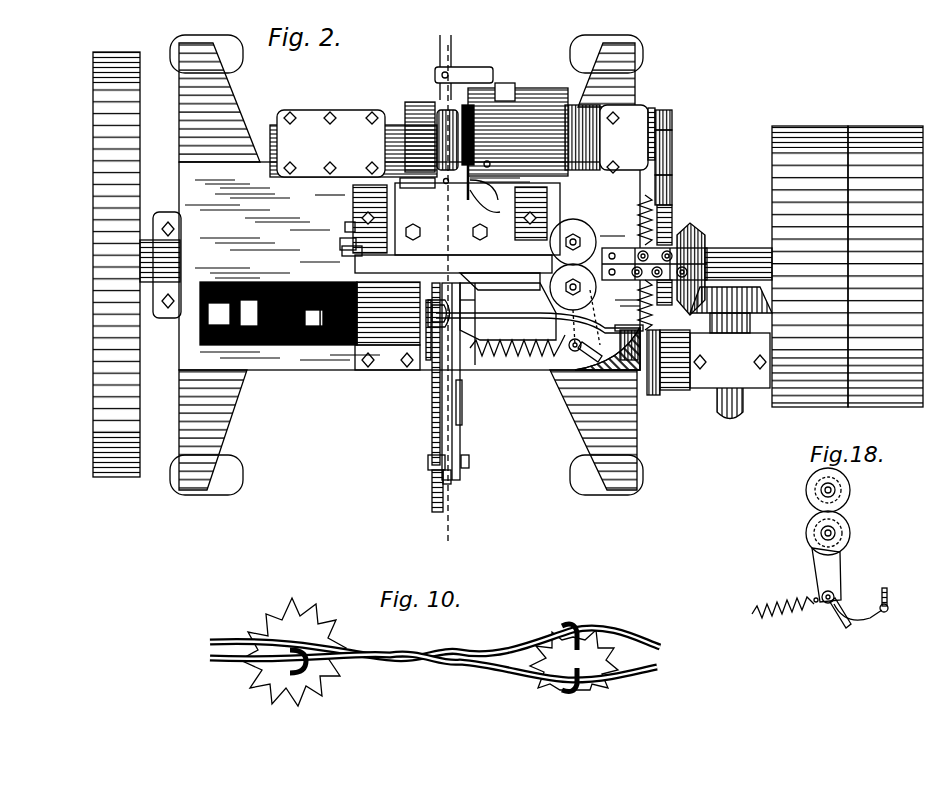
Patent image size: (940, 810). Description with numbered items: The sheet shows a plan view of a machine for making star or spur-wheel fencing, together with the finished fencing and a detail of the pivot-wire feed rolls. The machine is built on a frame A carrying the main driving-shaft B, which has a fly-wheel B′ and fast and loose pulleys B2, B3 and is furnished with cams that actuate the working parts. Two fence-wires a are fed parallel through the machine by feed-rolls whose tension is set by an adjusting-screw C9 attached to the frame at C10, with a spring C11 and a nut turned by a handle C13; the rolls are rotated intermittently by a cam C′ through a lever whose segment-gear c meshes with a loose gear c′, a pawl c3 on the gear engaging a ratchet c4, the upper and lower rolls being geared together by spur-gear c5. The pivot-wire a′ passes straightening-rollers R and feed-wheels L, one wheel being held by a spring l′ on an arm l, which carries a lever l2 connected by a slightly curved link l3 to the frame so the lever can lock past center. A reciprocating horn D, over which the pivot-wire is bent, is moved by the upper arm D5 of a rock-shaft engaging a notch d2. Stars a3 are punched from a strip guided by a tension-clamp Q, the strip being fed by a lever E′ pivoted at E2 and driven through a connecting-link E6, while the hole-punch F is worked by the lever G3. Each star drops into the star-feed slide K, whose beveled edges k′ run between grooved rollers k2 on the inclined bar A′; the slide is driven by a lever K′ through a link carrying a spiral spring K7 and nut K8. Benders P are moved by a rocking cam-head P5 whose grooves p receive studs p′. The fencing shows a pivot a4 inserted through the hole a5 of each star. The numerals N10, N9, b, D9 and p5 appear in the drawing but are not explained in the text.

In FIG. 2, the fly-wheel B′ is at (92, 242).
In FIG. 2, the frame A is at (455, 265).
In FIG. 2, the lever G3 is at (315, 345).
In FIG. 2, the hole-punch F is at (345, 335).
In FIG. 2, the upper shaft housing N10 is at (332, 123).
In FIG. 2, the gear N9 is at (432, 112).
In FIG. 2, the cam C′ is at (440, 100).
In FIG. 2, the fence-wires a is at (447, 64).
In FIG. 10, the fence-wires a is at (420, 664).
In FIG. 2, the section line b is at (388, 80).
In FIG. 2, the upper arm D5 is at (508, 160).
In FIG. 2, the handle C13 is at (478, 112).
In FIG. 2, the spring C11 is at (488, 157).
In FIG. 2, the adjusting-screw C9 is at (480, 169).
In FIG. 2, the horn D is at (445, 185).
In FIG. 2, the notch d2 is at (456, 201).
In FIG. 2, the guide D9 is at (489, 193).
In FIG. 2, the attachment point C10 is at (495, 208).
In FIG. 2, the rocking cam-head P5 is at (352, 196).
In FIG. 2, the benders P is at (348, 236).
In FIG. 2, the studs p′ is at (340, 244).
In FIG. 2, the inclined cams or grooves p is at (345, 262).
In FIG. 2, the bracket bolt p5 is at (543, 176).
In FIG. 2, the feed-wheels L is at (592, 228).
In FIG. 18, the feed-wheels L is at (850, 492).
In FIG. 2, the pivot E2 is at (654, 288).
In FIG. 2, the connecting-link E6 is at (538, 312).
In FIG. 2, the pivot-wire a′ is at (740, 226).
In FIG. 2, the spur-gear c5 is at (597, 108).
In FIG. 2, the pawl c3 is at (656, 108).
In FIG. 2, the ratchet c4 is at (668, 114).
In FIG. 2, the gear c′ is at (673, 145).
In FIG. 2, the segment-gear c is at (673, 182).
In FIG. 2, the straightening-rollers R is at (690, 228).
In FIG. 2, the main driving-shaft B is at (735, 262).
In FIG. 2, the fast pulley B2 is at (810, 266).
In FIG. 2, the loose pulley B3 is at (885, 266).
In FIG. 2, the star-feed slide K is at (462, 478).
In FIG. 2, the lever K′ is at (429, 360).
In FIG. 2, the upper guide and tension-clamp Q is at (430, 330).
In FIG. 2, the inclined projecting bar A′ is at (462, 432).
In FIG. 2, the lever E′ is at (500, 342).
In FIG. 2, the spring l′ is at (518, 355).
In FIG. 18, the spring l′ is at (785, 599).
In FIG. 2, the arm l is at (572, 352).
In FIG. 18, the arm l is at (826, 575).
In FIG. 2, the lever l2 is at (590, 360).
In FIG. 18, the lever l2 is at (828, 606).
In FIG. 2, the link l3 is at (626, 360).
In FIG. 18, the link l3 is at (866, 620).
In FIG. 2, the friction guide-rollers k2 is at (428, 468).
In FIG. 2, the beveled edges k′ is at (462, 470).
In FIG. 2, the spiral spring K7 is at (432, 492).
In FIG. 2, the nut or head K8 is at (452, 500).
In FIG. 10, the star a3 is at (429, 652).
In FIG. 10, the pivot a4 is at (578, 613).
In FIG. 10, the hole a5 is at (572, 682).